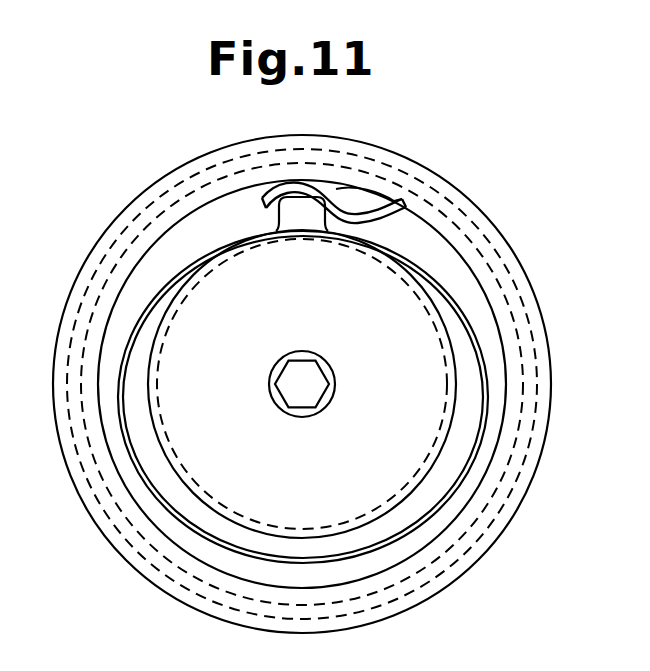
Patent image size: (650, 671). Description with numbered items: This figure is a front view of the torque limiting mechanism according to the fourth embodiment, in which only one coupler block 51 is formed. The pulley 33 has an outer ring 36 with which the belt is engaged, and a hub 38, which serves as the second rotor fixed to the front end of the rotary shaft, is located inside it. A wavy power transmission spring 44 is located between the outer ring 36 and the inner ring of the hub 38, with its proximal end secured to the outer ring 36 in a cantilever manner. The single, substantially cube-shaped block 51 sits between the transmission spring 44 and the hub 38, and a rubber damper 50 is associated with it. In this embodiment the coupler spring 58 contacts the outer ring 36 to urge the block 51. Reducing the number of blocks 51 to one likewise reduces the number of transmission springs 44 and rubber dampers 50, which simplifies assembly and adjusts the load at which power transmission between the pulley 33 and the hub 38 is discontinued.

The pulley 33 is at (484, 213).
The outer ring 36 is at (92, 481).
The hub 38 is at (422, 342).
The power transmission spring 44 is at (268, 196).
The rubber damper 50 is at (363, 197).
The coupler block 51 is at (293, 207).
The leaf spring 58 is at (488, 422).